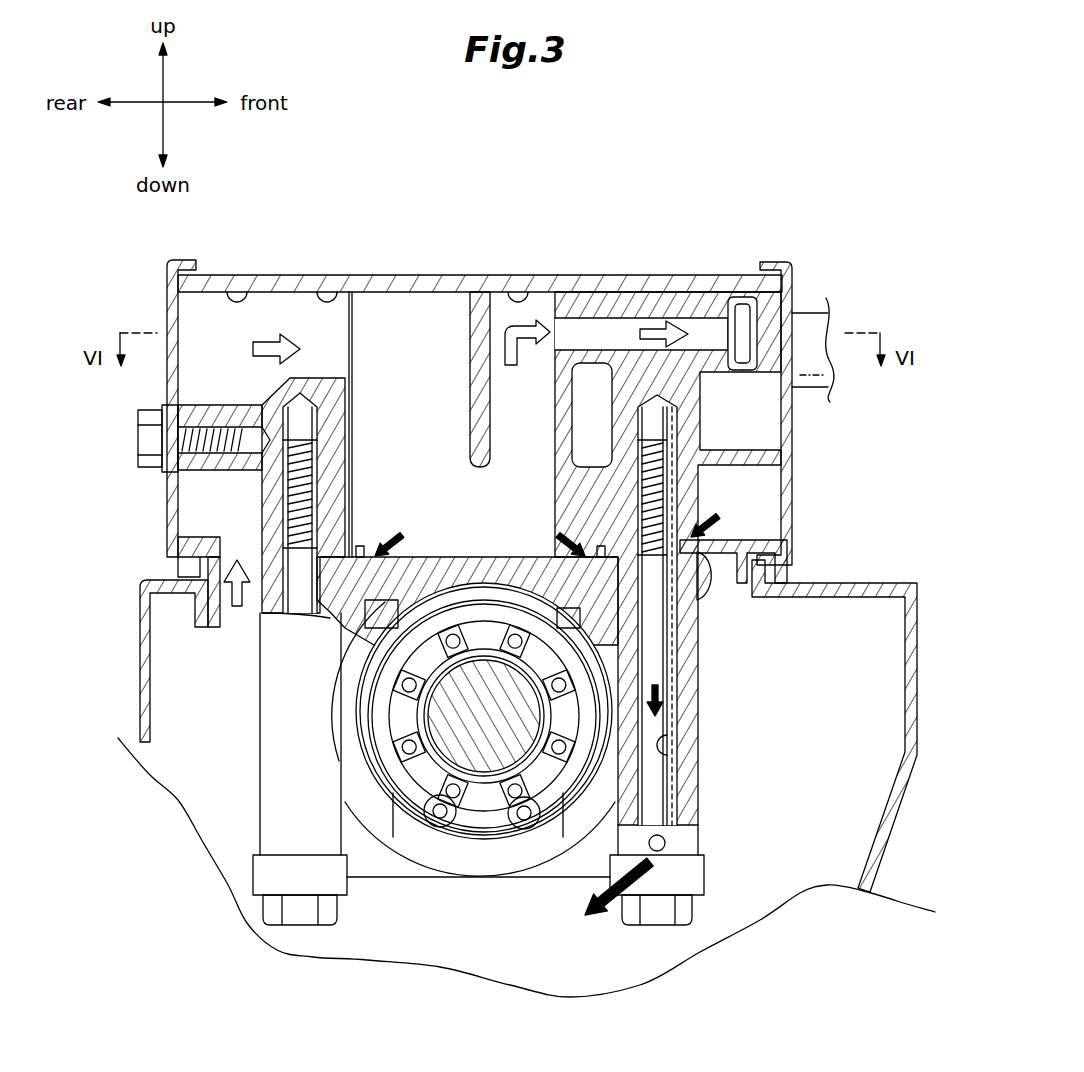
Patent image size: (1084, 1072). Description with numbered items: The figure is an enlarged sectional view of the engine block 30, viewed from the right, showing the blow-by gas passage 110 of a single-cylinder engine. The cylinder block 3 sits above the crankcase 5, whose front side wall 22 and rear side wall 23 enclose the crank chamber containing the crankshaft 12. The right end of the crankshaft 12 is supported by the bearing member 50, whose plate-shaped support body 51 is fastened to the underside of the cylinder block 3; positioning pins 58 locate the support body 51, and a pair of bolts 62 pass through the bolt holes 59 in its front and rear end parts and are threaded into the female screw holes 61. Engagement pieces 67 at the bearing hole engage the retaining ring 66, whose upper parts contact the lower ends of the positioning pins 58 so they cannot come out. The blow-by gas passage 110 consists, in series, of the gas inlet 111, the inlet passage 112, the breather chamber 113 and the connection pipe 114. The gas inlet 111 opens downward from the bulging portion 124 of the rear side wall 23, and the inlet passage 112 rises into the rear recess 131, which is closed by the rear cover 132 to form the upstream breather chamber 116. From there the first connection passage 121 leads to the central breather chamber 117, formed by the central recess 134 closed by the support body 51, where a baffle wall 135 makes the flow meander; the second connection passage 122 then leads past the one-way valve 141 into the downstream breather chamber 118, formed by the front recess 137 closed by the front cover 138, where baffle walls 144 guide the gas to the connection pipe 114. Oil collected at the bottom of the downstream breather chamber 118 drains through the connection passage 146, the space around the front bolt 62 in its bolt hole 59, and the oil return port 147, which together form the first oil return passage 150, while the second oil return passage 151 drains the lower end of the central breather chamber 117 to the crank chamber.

The cylinder block 3 is at (665, 290).
The crankcase 5 is at (878, 575).
The crankshaft 12 is at (483, 765).
The front side wall 22 is at (912, 655).
The rear side wall 23 is at (203, 583).
The engine block 30 is at (578, 268).
The bearing member 50 is at (715, 872).
The support body 51 is at (372, 880).
The positioning pins 58 is at (290, 655).
The bolt hole 59 is at (250, 608).
The female screw holes 61 is at (320, 480).
The bolts 62 is at (298, 915).
The retaining ring 66 is at (360, 735).
The engagement pieces 67 is at (456, 600).
The blow-by gas passage 110 is at (419, 292).
The gas inlet 111 is at (205, 612).
The inlet passage 112 is at (222, 545).
The breather chamber 113 is at (290, 288).
The connection pipe 114 is at (807, 322).
The upstream breather chamber 116 is at (195, 318).
The central breather chamber 117 is at (457, 300).
The downstream breather chamber 118 is at (765, 405).
The first connection passage 121 is at (350, 290).
The second connection passage 122 is at (703, 330).
The bulging portion 124 is at (170, 592).
The rear recess 131 is at (248, 290).
The rear cover 132 is at (167, 393).
The central recess 134 is at (528, 292).
The baffle wall 135 is at (474, 427).
The front recess 137 is at (785, 545).
The front cover 138 is at (785, 515).
The one-way valve 141 is at (777, 262).
The baffle walls 144 is at (790, 465).
The connection passage 146 is at (712, 580).
The oil return port 147 is at (657, 852).
The first oil return passage 150 is at (692, 705).
The second oil return passage 151 is at (362, 546).